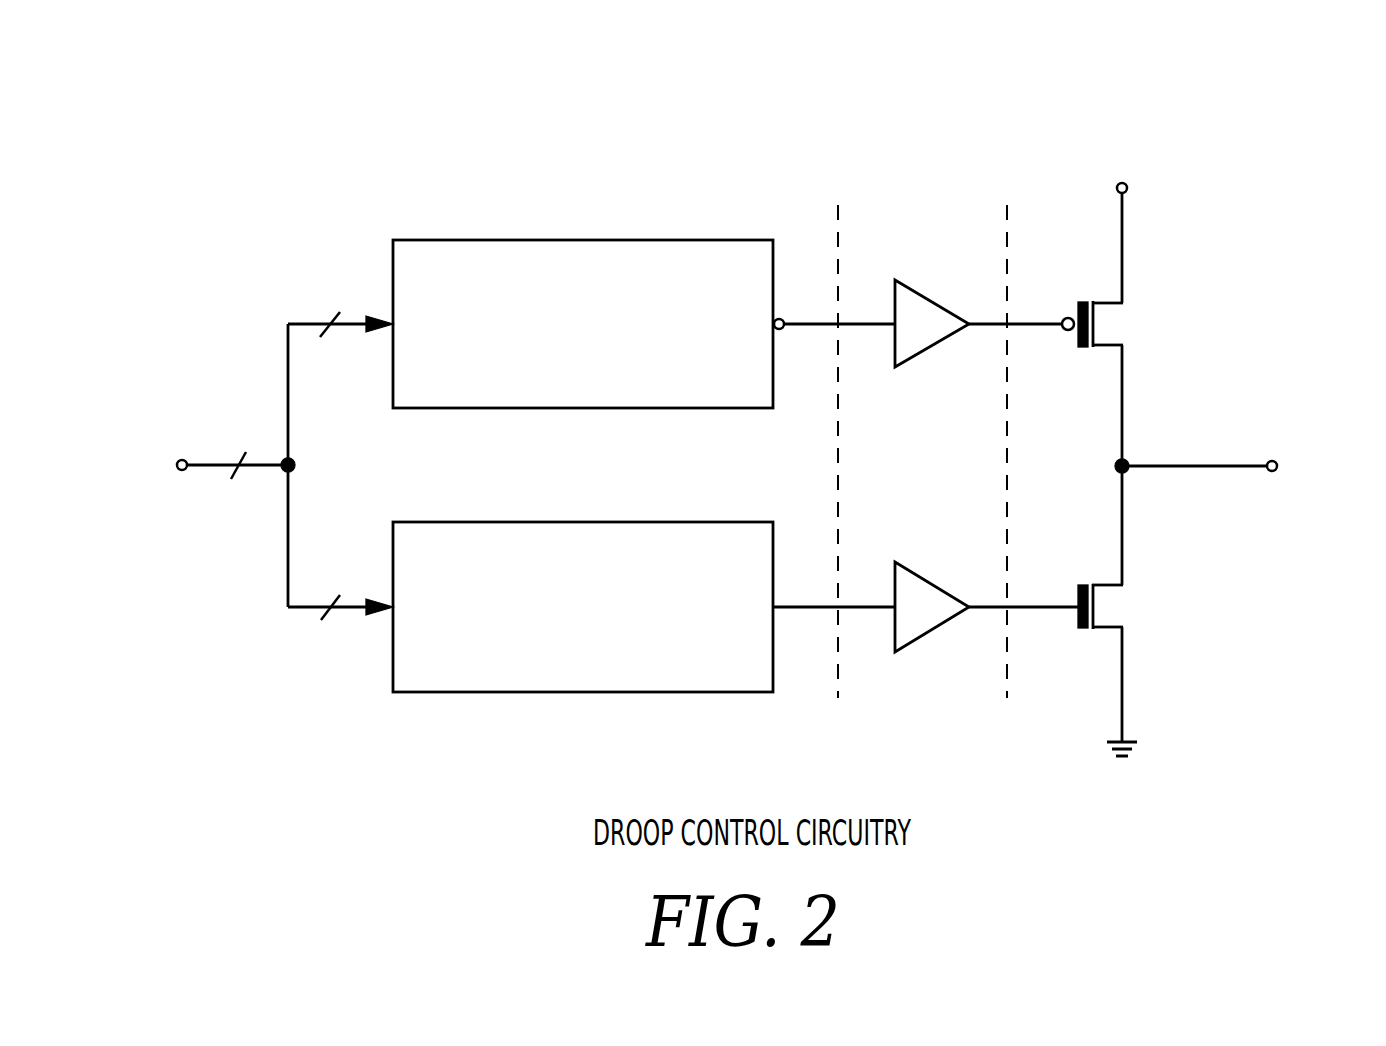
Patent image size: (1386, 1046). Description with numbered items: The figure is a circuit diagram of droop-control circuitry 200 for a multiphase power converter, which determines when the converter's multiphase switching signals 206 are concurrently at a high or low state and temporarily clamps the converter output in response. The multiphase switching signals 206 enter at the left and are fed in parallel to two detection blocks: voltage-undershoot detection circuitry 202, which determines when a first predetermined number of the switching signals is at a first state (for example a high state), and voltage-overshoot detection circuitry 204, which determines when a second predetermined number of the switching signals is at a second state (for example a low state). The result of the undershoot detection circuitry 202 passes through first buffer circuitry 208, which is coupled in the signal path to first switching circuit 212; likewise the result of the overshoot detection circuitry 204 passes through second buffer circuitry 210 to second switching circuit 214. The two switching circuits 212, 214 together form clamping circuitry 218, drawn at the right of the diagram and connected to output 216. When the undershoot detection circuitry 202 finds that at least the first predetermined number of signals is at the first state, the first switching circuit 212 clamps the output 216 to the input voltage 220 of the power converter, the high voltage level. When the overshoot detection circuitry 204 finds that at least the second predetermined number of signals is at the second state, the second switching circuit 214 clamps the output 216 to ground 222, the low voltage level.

The droop-control circuitry 200 is at (290, 722).
The voltage-undershoot detection circuitry 202 is at (584, 239).
The voltage-overshoot detection circuitry 204 is at (584, 521).
The multiphase switching signals 206 is at (212, 471).
The first buffer circuitry 208 is at (934, 348).
The second buffer circuitry 210 is at (934, 629).
The first switching circuit 212 is at (1157, 305).
The second switching circuit 214 is at (1157, 590).
The output 216 is at (1245, 471).
The clamping circuitry 218 is at (1277, 140).
The input voltage 220 is at (1129, 188).
The ground 222 is at (1138, 748).